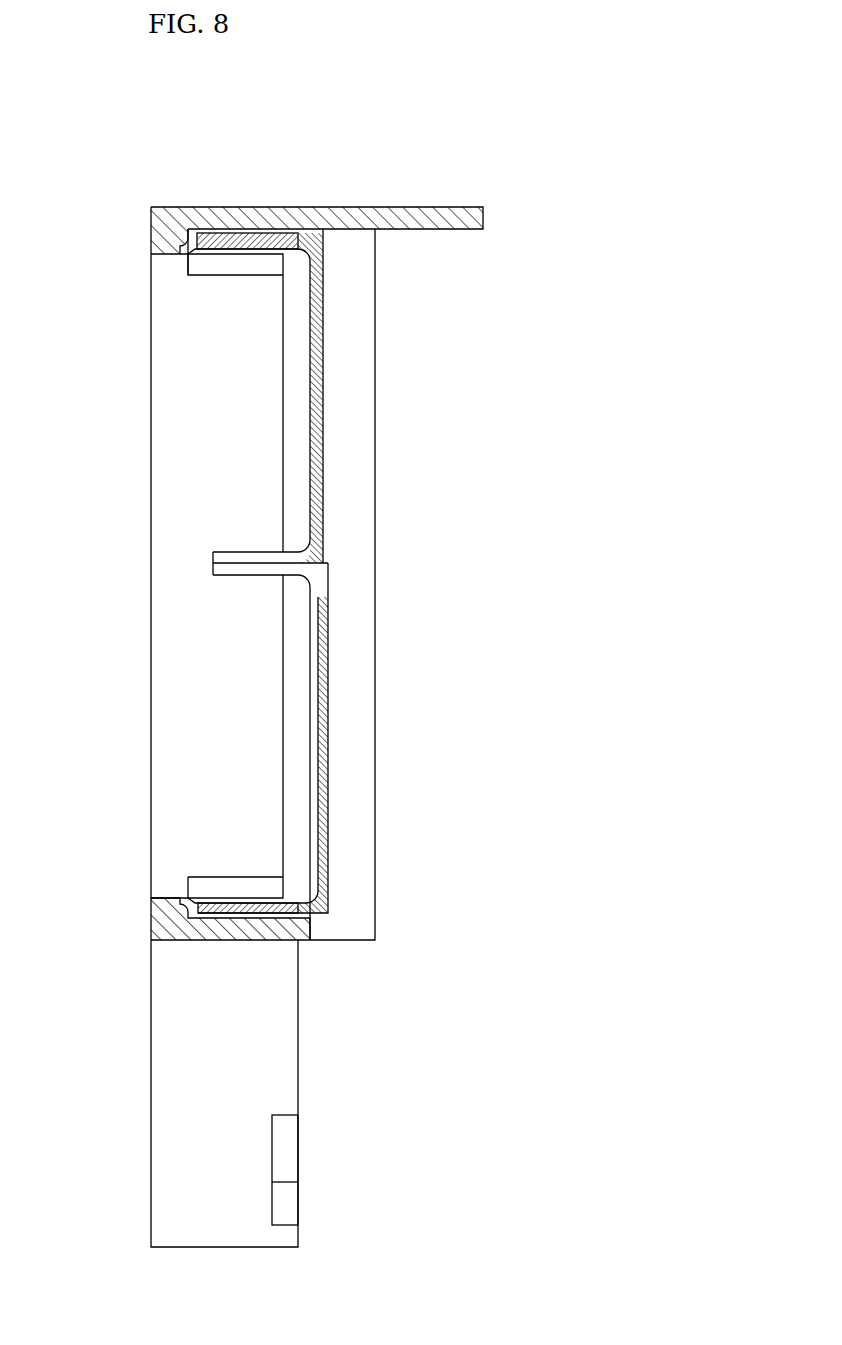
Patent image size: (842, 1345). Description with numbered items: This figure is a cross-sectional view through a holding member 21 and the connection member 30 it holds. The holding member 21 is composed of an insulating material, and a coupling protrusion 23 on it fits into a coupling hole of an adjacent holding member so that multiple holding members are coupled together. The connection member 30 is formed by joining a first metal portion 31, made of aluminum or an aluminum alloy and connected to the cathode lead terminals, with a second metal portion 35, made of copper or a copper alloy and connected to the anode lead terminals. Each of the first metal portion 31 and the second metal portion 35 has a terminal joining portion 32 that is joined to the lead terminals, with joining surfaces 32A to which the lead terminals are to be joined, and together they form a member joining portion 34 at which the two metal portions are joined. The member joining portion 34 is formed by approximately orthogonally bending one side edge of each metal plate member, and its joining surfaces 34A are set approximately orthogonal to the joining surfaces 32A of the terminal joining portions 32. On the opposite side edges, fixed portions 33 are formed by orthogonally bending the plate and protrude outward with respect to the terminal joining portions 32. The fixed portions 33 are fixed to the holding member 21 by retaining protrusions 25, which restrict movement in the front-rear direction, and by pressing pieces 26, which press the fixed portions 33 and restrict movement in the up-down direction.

The holding member 21 is at (352, 207).
The coupling protrusion 23 is at (288, 1153).
The retaining protrusion 25 is at (197, 232).
The pressing piece 26 is at (222, 276).
The connection member 30 is at (346, 571).
The first metal portion 31 is at (323, 467).
The terminal joining portion 32 is at (323, 352).
The joining surface 32A is at (323, 388).
The fixed portion 33 is at (247, 238).
The member joining portion 34 is at (171, 558).
The joining surface 34A is at (253, 560).
The second metal portion 35 is at (326, 660).